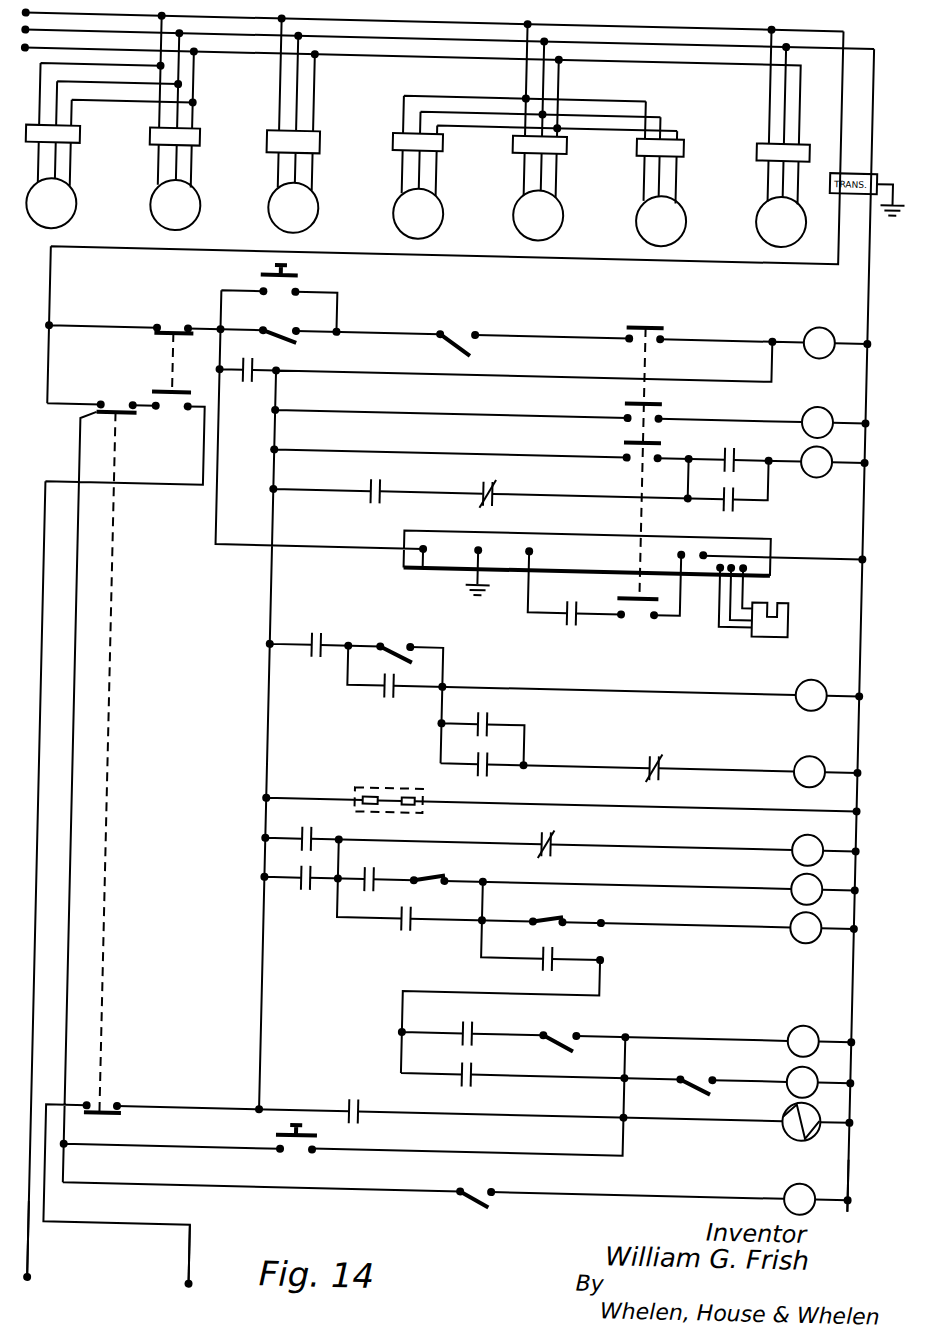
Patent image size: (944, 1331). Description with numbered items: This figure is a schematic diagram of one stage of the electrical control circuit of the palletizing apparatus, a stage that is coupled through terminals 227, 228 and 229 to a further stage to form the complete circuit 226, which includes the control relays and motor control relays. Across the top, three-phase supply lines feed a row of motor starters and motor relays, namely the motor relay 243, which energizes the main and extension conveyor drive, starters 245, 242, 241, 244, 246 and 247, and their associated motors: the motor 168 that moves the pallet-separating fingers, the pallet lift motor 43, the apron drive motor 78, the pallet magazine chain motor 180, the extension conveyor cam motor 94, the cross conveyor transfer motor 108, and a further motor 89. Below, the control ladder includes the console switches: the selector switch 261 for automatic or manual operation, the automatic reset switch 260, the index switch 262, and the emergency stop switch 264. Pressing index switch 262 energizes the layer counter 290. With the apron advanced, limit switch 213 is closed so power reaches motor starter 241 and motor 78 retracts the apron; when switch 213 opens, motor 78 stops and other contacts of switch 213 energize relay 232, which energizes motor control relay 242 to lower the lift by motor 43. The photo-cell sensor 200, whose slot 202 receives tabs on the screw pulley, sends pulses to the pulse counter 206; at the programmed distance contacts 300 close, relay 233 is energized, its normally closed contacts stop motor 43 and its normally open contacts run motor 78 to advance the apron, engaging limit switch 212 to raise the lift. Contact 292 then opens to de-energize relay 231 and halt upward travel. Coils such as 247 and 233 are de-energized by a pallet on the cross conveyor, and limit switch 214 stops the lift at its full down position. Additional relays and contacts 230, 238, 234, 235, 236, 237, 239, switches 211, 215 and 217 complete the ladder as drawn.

The circuit 226 is at (841, 13).
The terminal 227 is at (30, 1256).
The terminal 228 is at (183, 1270).
The terminal 229 is at (872, 1193).
The motor relay 243 is at (83, 131).
The motor starter 245 is at (155, 136).
The motor control relay 242 is at (273, 132).
The motor starter 241 is at (446, 135).
The motor starter / contact 244 is at (570, 133).
The motor starter 246 is at (681, 129).
The coil 247 is at (764, 138).
The motor 89 is at (66, 193).
The motor 168 is at (183, 204).
The electric motor 43 is at (297, 208).
The electric motor 78 is at (415, 194).
The motor 180 is at (550, 200).
The motor 94 is at (683, 202).
The motor 108 is at (775, 212).
The automatic reset switch 260 is at (319, 285).
The selector switch 261 is at (187, 308).
The emergency stop switch 264 is at (127, 375).
The limit switch 211 is at (300, 336).
The limit switch 212 is at (462, 314).
The index switch 262 is at (686, 318).
The relay 230 is at (845, 305).
The counter 290 is at (847, 383).
The contact 292 is at (762, 430).
The relay 231 is at (829, 446).
The relay 238 is at (508, 469).
The pulse counter 206 is at (412, 558).
The slot 202 is at (787, 592).
The photo-cell sensor 200 is at (785, 615).
The relay 233 is at (331, 633).
The limit switch 213 is at (405, 639).
The contacts 300 is at (506, 705).
The relay 232 is at (843, 653).
The relay 234 is at (819, 824).
The relay 239 is at (393, 859).
The switch 217 is at (466, 867).
The relay 235 is at (818, 862).
The switch 215 is at (586, 905).
The relay 236 is at (815, 904).
The relay 237 is at (641, 1024).
The limit switch 214 is at (469, 1186).